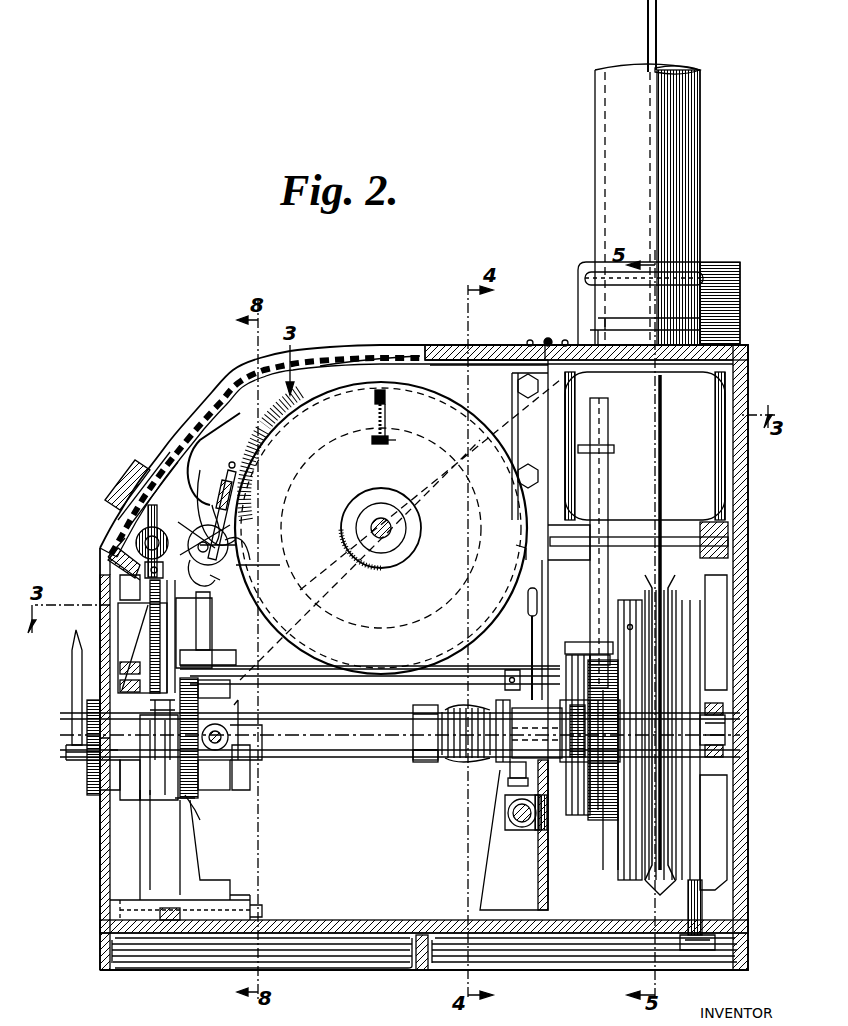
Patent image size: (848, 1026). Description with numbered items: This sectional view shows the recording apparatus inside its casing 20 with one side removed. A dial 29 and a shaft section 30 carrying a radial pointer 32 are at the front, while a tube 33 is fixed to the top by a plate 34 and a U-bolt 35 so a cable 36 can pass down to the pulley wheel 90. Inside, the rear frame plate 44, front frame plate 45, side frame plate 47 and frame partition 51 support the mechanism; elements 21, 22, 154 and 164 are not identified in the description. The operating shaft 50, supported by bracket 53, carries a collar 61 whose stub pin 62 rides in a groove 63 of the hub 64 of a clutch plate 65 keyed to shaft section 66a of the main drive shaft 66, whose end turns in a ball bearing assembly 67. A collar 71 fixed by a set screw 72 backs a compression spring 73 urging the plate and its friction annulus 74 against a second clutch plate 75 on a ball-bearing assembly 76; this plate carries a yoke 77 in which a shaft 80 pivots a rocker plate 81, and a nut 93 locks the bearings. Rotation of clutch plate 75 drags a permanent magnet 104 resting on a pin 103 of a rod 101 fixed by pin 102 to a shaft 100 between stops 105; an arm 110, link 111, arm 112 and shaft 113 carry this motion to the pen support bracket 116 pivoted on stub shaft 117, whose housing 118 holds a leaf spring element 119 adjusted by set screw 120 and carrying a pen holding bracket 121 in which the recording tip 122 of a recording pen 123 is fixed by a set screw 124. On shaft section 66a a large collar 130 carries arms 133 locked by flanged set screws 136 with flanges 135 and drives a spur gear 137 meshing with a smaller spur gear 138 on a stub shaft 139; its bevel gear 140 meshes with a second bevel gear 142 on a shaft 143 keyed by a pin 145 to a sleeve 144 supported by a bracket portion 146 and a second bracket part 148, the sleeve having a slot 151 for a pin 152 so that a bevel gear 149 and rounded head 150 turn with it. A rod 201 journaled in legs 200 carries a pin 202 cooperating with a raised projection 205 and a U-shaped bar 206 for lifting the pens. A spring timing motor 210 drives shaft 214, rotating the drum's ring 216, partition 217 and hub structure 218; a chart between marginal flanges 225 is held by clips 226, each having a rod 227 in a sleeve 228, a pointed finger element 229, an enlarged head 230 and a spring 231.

The casing 20 is at (370, 853).
The cover band 21 is at (190, 418).
The screw 22 is at (549, 340).
The dial 29 is at (88, 790).
The shaft section 30 is at (70, 745).
The radial pointer 32 is at (75, 665).
The tube 33 is at (700, 115).
The plate 34 is at (722, 262).
The U-bolt 35 is at (705, 278).
The cable 36 is at (657, 27).
The rear frame plate 44 is at (740, 660).
The front frame plate 45 is at (100, 870).
The side frame plate 47 is at (496, 360).
The shaft 50 is at (508, 813).
The frame partition 51 is at (548, 865).
The bracket 53 is at (528, 835).
The collar 61 is at (508, 790).
The stub pin 62 is at (510, 772).
The groove 63 is at (566, 731).
The hub 64 is at (500, 700).
The clutch plate 65 is at (592, 808).
The main drive shaft 66 is at (725, 728).
The shaft section 66a is at (336, 752).
The ball bearing assembly 67 is at (725, 707).
The collar 71 is at (425, 764).
The set screw 72 is at (428, 705).
The compression spring 73 is at (450, 760).
The annulus 74 is at (581, 774).
The second clutch plate 75 is at (607, 812).
The ball-bearing assembly 76 is at (636, 873).
The yoke 77 is at (620, 835).
The shaft 80 is at (633, 627).
The rocker plate 81 is at (645, 598).
The pulley wheel 90 is at (677, 845).
The nut 93 is at (704, 780).
The shaft 100 is at (673, 540).
The rod 101 is at (608, 482).
The pin 102 is at (608, 512).
The pin 103 is at (592, 656).
The permanent magnet 104 is at (575, 640).
The stops 105 is at (620, 445).
The arm 110 is at (526, 556).
The link 111 is at (530, 640).
The arm 112 is at (508, 670).
The shaft 113 is at (316, 686).
The pen support bracket 116 is at (218, 645).
The stub shaft 117 is at (262, 905).
The projecting housing 118 is at (215, 615).
The leaf spring element 119 is at (204, 520).
The set screw 120 is at (262, 568).
The pen holding bracket 121 is at (205, 495).
The recording tip 122 is at (248, 482).
The recording pen 123 is at (236, 420).
The set screw 124 is at (230, 468).
The large collar 130 is at (232, 790).
The arm 133 is at (203, 738).
The flange 135 is at (244, 758).
The flanged-headed set screw 136 is at (228, 728).
The spur gear 137 is at (205, 807).
The spur gear 138 is at (146, 780).
The stub shaft 139 is at (159, 757).
The bevel gear 140 is at (215, 735).
The second bevel gear 142 is at (100, 760).
The shaft 143 is at (155, 704).
The housing 144 is at (142, 648).
The pin 145 is at (218, 632).
The bracket portion 146 is at (249, 722).
The bracket part 148 is at (100, 563).
The bevel gear 149 is at (118, 548).
The rounded head 150 is at (140, 490).
The slot 151 is at (165, 623).
The pin 152 is at (148, 615).
The member 154 is at (112, 552).
The rod 164 is at (235, 663).
The legs 200 is at (201, 495).
The rod 201 is at (228, 537).
The pin 202 is at (201, 537).
The raised projection 205 is at (214, 574).
The U-shaped bar 206 is at (236, 541).
The spring timing motor 210 is at (432, 490).
The shaft 214 is at (392, 528).
The ring-like member 216 is at (520, 470).
The supporting partition 217 is at (418, 615).
The hub structure 218 is at (366, 553).
The marginal flanges 225 is at (470, 398).
The clips 226 is at (372, 418).
The rod 227 is at (388, 412).
The sleeve 228 is at (375, 400).
The finger element 229 is at (386, 360).
The enlarged head 230 is at (392, 443).
The spring 231 is at (372, 433).